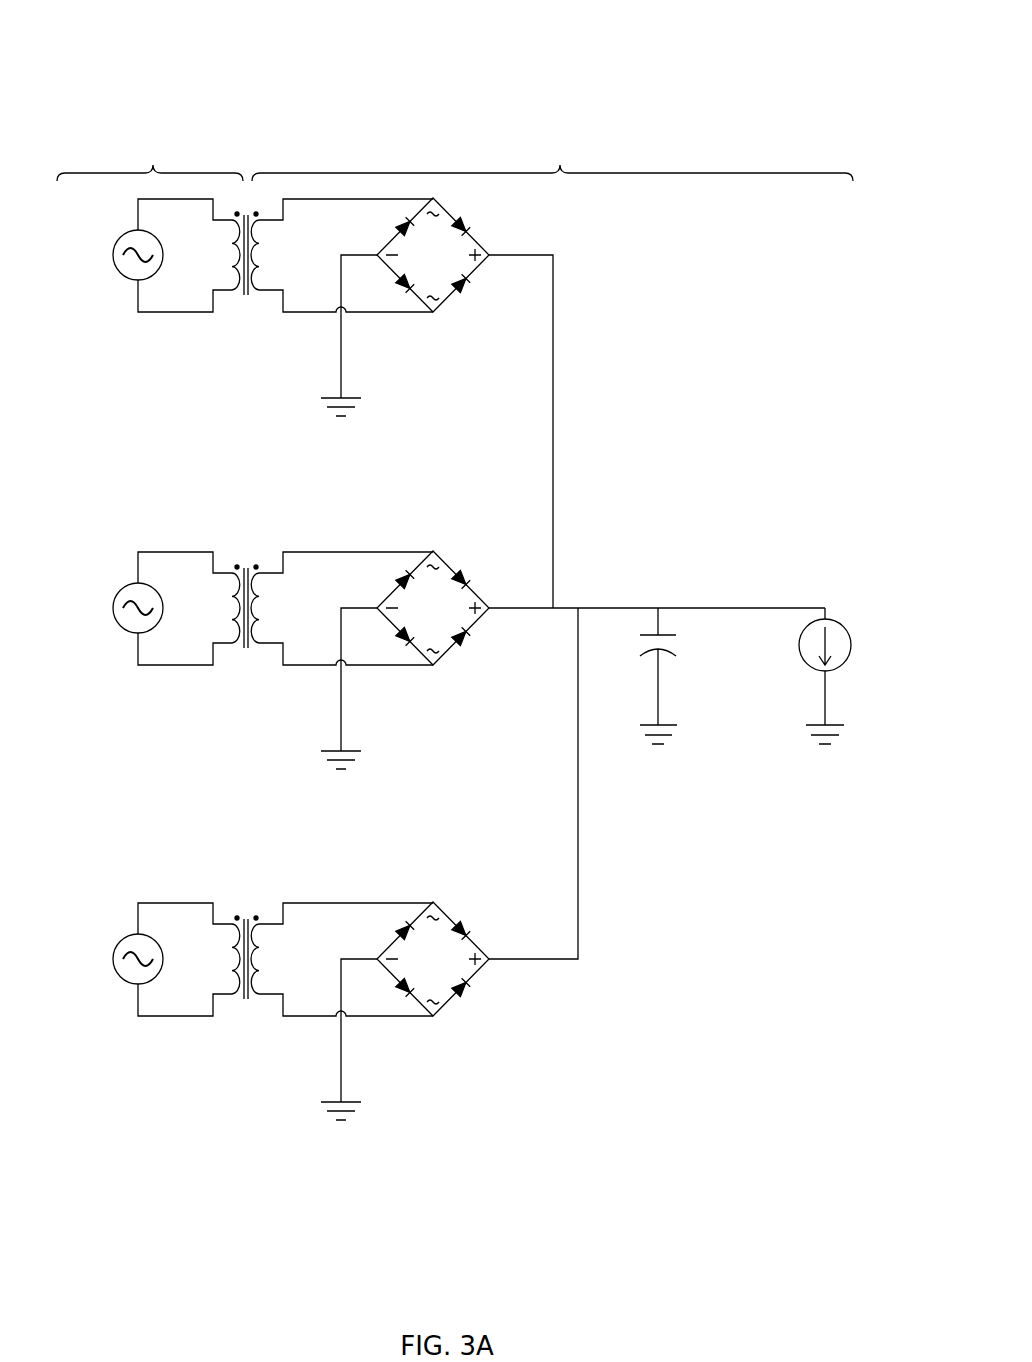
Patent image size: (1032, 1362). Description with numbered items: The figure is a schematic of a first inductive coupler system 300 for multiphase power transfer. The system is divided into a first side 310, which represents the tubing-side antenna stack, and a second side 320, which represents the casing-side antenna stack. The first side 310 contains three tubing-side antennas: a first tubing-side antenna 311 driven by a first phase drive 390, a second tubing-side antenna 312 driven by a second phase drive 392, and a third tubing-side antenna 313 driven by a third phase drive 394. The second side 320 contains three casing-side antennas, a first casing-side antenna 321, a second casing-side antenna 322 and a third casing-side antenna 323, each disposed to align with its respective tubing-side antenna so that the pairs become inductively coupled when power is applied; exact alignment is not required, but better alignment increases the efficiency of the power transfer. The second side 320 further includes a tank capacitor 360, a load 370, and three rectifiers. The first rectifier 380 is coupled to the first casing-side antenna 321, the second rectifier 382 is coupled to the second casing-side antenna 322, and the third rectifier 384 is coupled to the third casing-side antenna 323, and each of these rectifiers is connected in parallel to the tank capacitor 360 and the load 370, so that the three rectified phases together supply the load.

The first inductive coupler system 300 is at (149, 30).
The first side 310 is at (150, 151).
The second side 320 is at (552, 151).
The first tubing-side antenna 311 is at (216, 253).
The second tubing-side antenna 312 is at (216, 606).
The third tubing-side antenna 313 is at (216, 957).
The first casing-side antenna 321 is at (342, 255).
The second casing-side antenna 322 is at (342, 608).
The third casing-side antenna 323 is at (342, 959).
The first rectifier 380 is at (437, 403).
The second rectifier 382 is at (573, 660).
The third rectifier 384 is at (449, 864).
The first phase drive 390 is at (147, 255).
The second phase drive 392 is at (147, 608).
The third phase drive 394 is at (147, 959).
The tank capacitor 360 is at (683, 676).
The load 370 is at (847, 676).